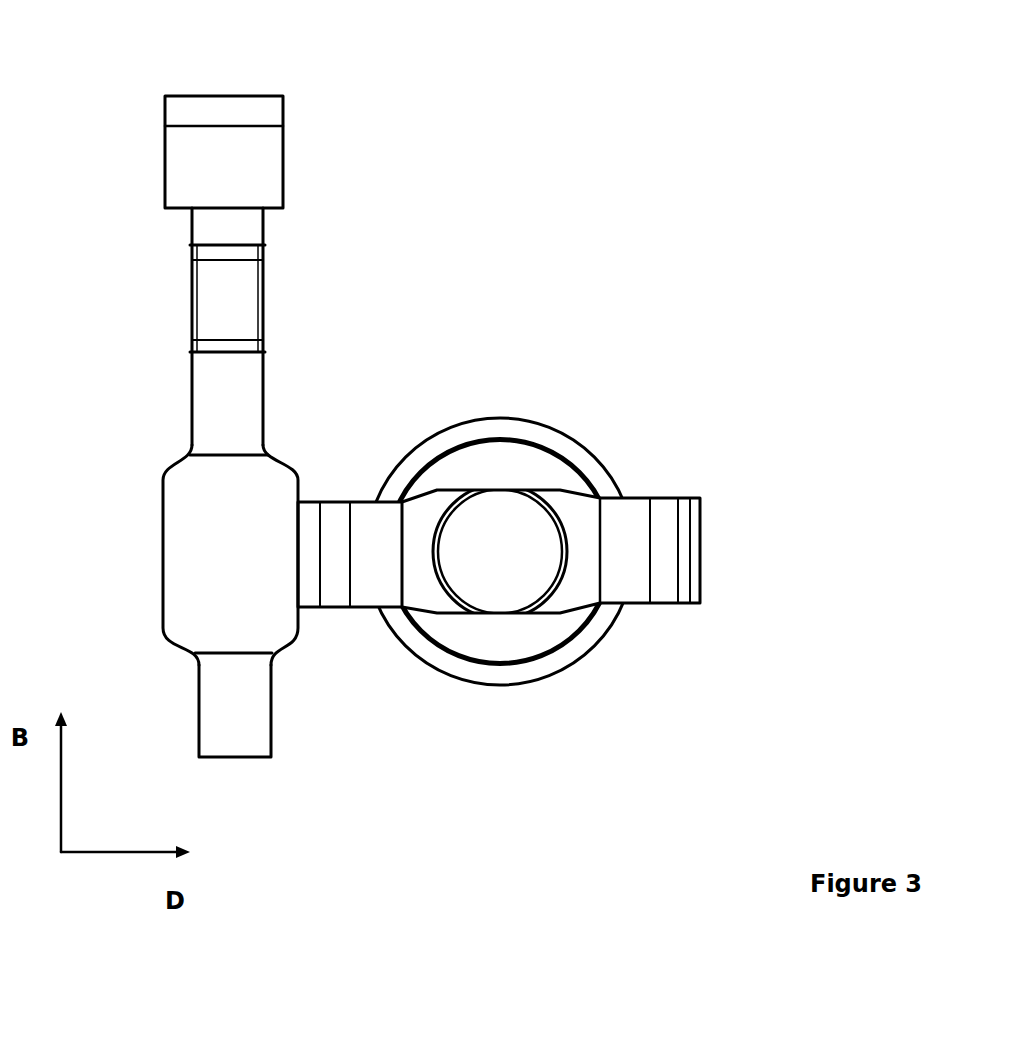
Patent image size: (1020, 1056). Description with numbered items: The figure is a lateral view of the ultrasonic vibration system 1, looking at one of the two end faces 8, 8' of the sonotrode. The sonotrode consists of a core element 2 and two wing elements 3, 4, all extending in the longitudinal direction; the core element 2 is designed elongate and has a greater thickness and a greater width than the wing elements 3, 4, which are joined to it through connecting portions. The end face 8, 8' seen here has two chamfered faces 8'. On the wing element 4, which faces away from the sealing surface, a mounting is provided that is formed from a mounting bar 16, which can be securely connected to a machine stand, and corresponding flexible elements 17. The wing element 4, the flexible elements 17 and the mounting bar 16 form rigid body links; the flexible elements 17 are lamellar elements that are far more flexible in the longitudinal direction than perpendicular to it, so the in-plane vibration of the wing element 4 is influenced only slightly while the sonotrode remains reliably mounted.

The ultrasonic vibration system 1 is at (408, 467).
The core element 2 is at (197, 555).
The wing element 3 is at (240, 737).
The wing element 4 is at (257, 393).
The end face 8 is at (230, 555).
The chamfered face 8' is at (231, 550).
The mounting bar 16 is at (270, 163).
The flexible elements 17 is at (250, 280).